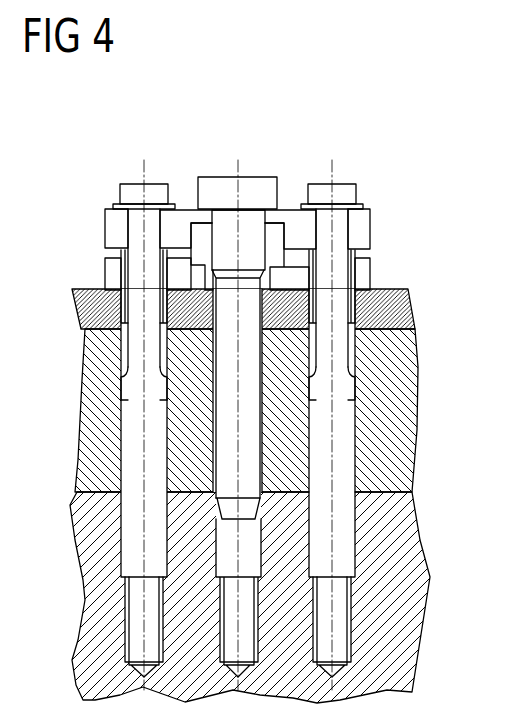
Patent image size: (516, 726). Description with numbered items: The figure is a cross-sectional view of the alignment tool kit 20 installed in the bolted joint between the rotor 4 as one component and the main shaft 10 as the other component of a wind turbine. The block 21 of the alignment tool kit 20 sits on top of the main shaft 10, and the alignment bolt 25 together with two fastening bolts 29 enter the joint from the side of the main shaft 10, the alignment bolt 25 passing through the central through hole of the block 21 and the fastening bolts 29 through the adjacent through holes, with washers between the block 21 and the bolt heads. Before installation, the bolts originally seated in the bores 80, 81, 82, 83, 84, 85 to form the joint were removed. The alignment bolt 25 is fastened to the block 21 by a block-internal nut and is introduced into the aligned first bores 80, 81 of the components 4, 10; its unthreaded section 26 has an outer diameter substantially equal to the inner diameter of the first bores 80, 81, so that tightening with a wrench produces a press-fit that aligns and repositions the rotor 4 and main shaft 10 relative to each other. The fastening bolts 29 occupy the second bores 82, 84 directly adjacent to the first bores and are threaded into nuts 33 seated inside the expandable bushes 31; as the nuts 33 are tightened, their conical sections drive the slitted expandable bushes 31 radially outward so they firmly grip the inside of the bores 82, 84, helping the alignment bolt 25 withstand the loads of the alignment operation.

The rotor 4 is at (80, 525).
The main shaft 10 is at (90, 415).
The alignment tool kit 20 is at (207, 221).
The block 21 is at (115, 227).
The alignment bolt 25 is at (253, 182).
The unthreaded section 26 is at (262, 412).
The fastening bolts 29 is at (370, 114).
The expandable bushes 31 is at (118, 340).
The nuts 33 is at (122, 382).
The first bore 80 is at (130, 468).
The first bore 81 is at (322, 557).
The second bore 82 is at (125, 445).
The bore 83 is at (125, 565).
The second bore 84 is at (355, 468).
The bore 85 is at (355, 518).